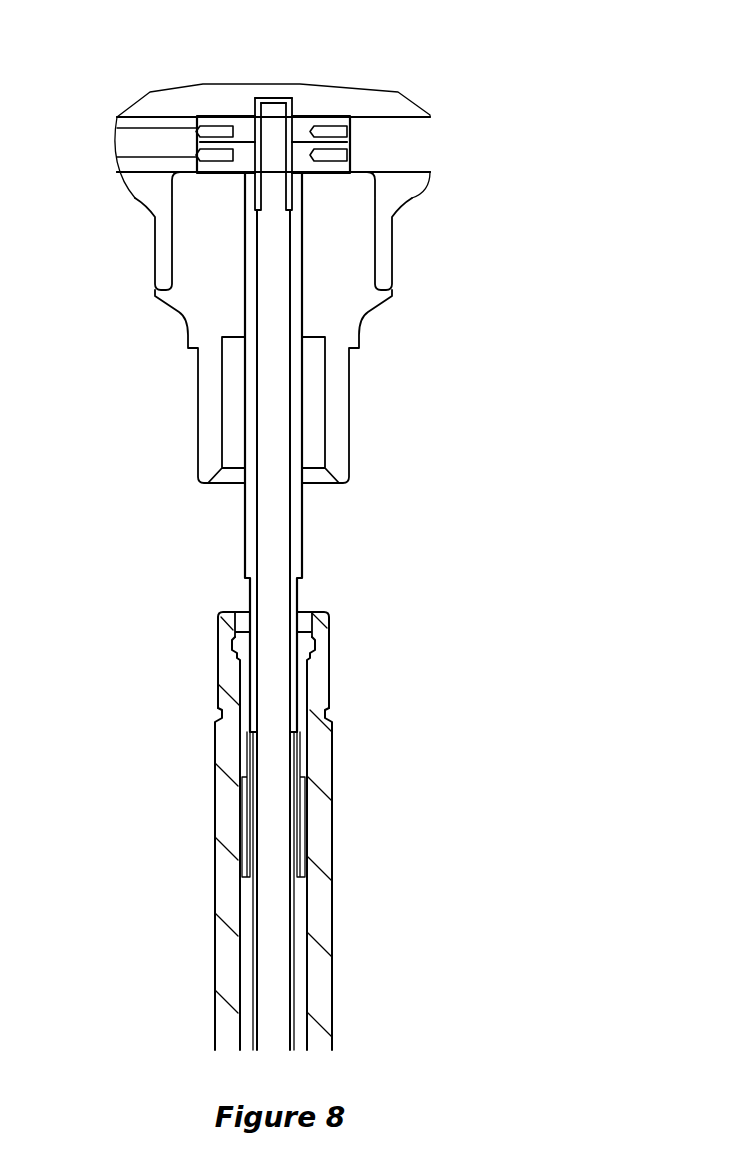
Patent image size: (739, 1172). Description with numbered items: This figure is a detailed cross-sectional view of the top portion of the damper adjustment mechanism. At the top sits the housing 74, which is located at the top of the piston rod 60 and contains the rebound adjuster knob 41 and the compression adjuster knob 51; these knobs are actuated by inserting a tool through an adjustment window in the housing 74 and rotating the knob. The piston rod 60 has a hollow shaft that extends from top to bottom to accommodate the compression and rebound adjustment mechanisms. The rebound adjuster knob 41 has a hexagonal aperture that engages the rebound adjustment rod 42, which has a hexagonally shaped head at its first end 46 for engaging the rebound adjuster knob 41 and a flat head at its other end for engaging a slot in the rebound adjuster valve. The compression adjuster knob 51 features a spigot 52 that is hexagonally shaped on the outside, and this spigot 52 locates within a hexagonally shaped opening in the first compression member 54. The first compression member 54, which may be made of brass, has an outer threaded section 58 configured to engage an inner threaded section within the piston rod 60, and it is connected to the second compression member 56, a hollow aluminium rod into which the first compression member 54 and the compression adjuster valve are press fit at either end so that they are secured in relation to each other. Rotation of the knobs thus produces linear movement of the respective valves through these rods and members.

The housing 74 is at (147, 107).
The first end 46 is at (270, 113).
The rebound adjuster knob 41 is at (302, 130).
The compression adjuster knob 51 is at (350, 167).
The rebound adjustment rod 42 is at (273, 545).
The spigot 52 is at (297, 573).
The outer threaded section 58 is at (307, 638).
The piston rod 60 is at (227, 683).
The first compression member 54 is at (302, 758).
The second compression member 56 is at (302, 920).